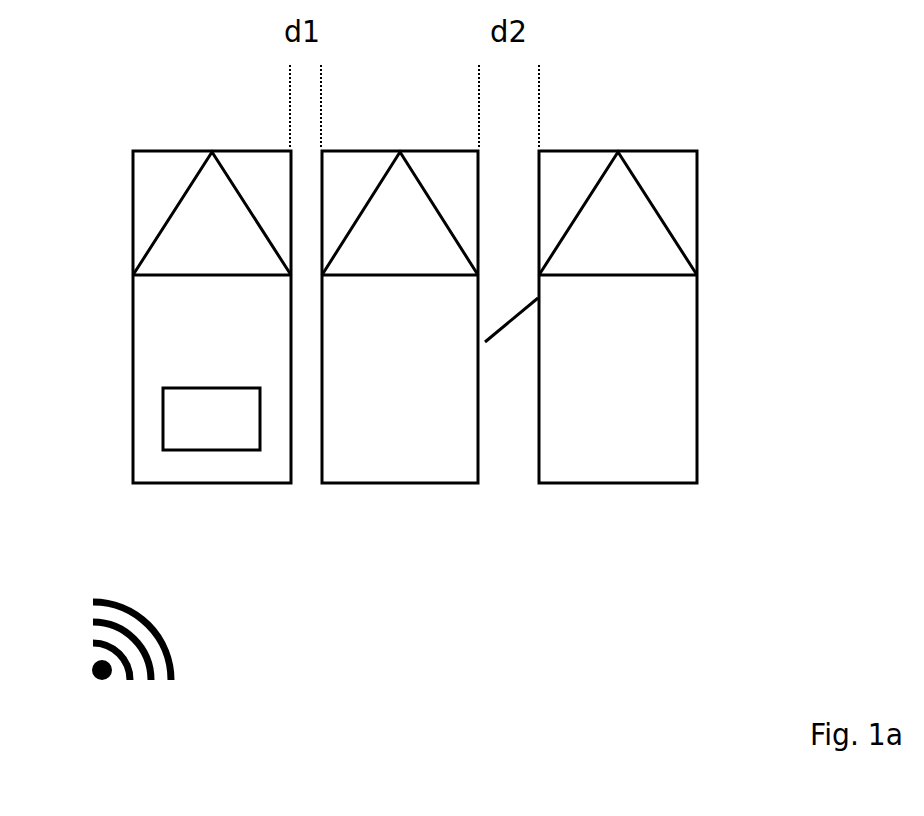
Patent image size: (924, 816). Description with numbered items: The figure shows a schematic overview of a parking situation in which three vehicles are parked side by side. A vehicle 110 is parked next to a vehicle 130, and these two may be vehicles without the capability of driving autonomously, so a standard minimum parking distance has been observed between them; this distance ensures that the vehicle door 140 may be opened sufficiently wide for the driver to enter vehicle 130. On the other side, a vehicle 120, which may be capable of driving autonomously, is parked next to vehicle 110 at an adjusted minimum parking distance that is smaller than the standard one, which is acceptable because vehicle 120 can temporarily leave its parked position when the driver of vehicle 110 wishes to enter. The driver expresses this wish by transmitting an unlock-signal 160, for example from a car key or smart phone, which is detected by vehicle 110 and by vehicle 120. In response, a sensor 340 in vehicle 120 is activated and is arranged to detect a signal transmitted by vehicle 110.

The vehicle 110 is at (400, 317).
The vehicle 120 is at (212, 317).
The vehicle 130 is at (618, 317).
The vehicle door 140 is at (513, 340).
The unlock-signal 160 is at (104, 668).
The sensor 340 is at (211, 419).